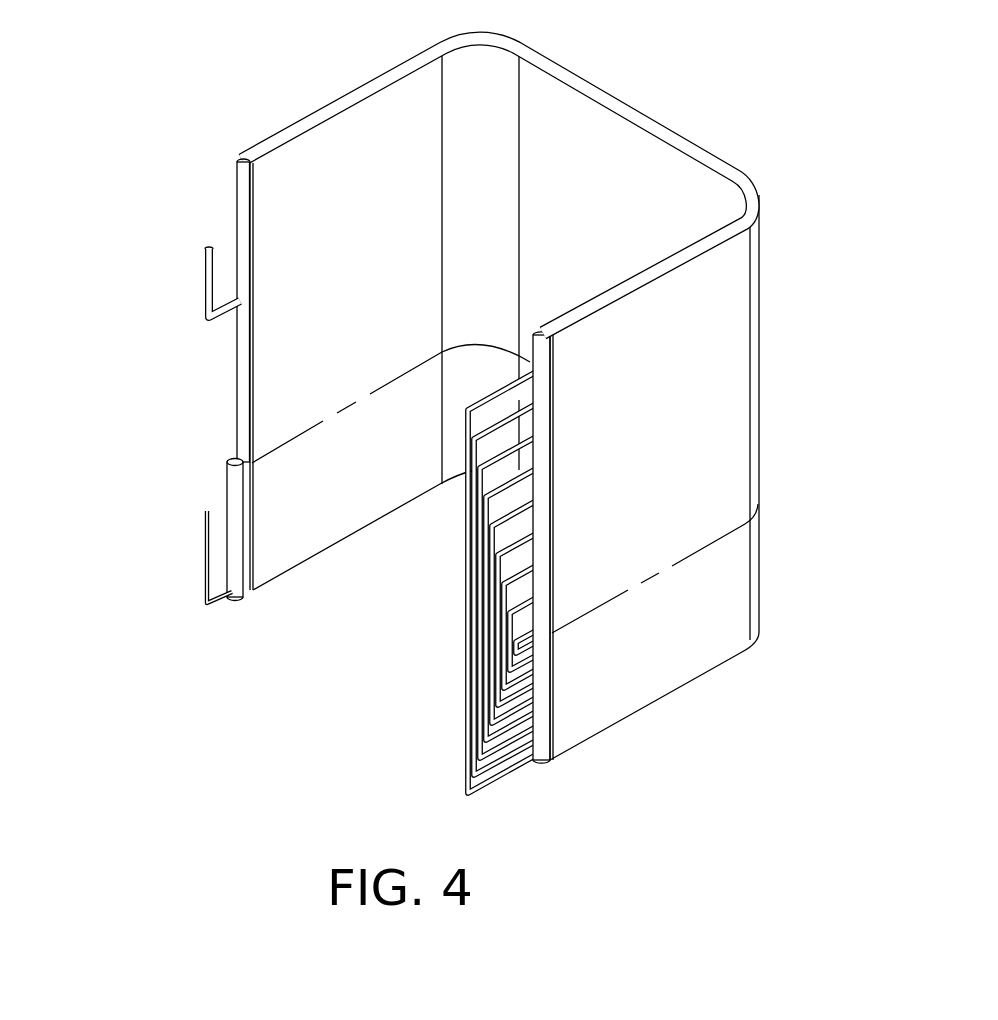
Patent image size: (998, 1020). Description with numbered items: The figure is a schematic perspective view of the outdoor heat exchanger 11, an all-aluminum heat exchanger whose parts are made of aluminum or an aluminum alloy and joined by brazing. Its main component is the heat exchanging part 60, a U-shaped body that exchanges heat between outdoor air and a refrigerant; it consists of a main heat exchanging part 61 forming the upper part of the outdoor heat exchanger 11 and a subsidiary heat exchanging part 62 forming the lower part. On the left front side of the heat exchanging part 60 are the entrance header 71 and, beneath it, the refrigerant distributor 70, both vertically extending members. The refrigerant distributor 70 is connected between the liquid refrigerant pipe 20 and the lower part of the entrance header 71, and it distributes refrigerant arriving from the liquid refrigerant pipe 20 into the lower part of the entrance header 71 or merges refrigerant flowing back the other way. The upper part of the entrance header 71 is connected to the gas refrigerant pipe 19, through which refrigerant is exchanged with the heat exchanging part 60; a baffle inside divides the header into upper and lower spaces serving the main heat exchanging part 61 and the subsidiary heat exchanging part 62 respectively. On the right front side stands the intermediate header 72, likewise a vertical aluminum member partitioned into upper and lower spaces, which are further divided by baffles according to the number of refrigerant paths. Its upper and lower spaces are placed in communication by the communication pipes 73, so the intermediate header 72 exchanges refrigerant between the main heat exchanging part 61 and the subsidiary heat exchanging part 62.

The outdoor heat exchanger 11 is at (905, 100).
The gas refrigerant pipe 19 is at (205, 295).
The liquid refrigerant pipe 20 is at (205, 562).
The heat exchanging part 60 is at (529, 404).
The main heat exchanging part 61 is at (748, 357).
The subsidiary heat exchanging part 62 is at (747, 582).
The refrigerant distributor 70 is at (222, 472).
The entrance header 71 is at (235, 183).
The intermediate header 72 is at (528, 337).
The communication pipes 73 is at (460, 648).